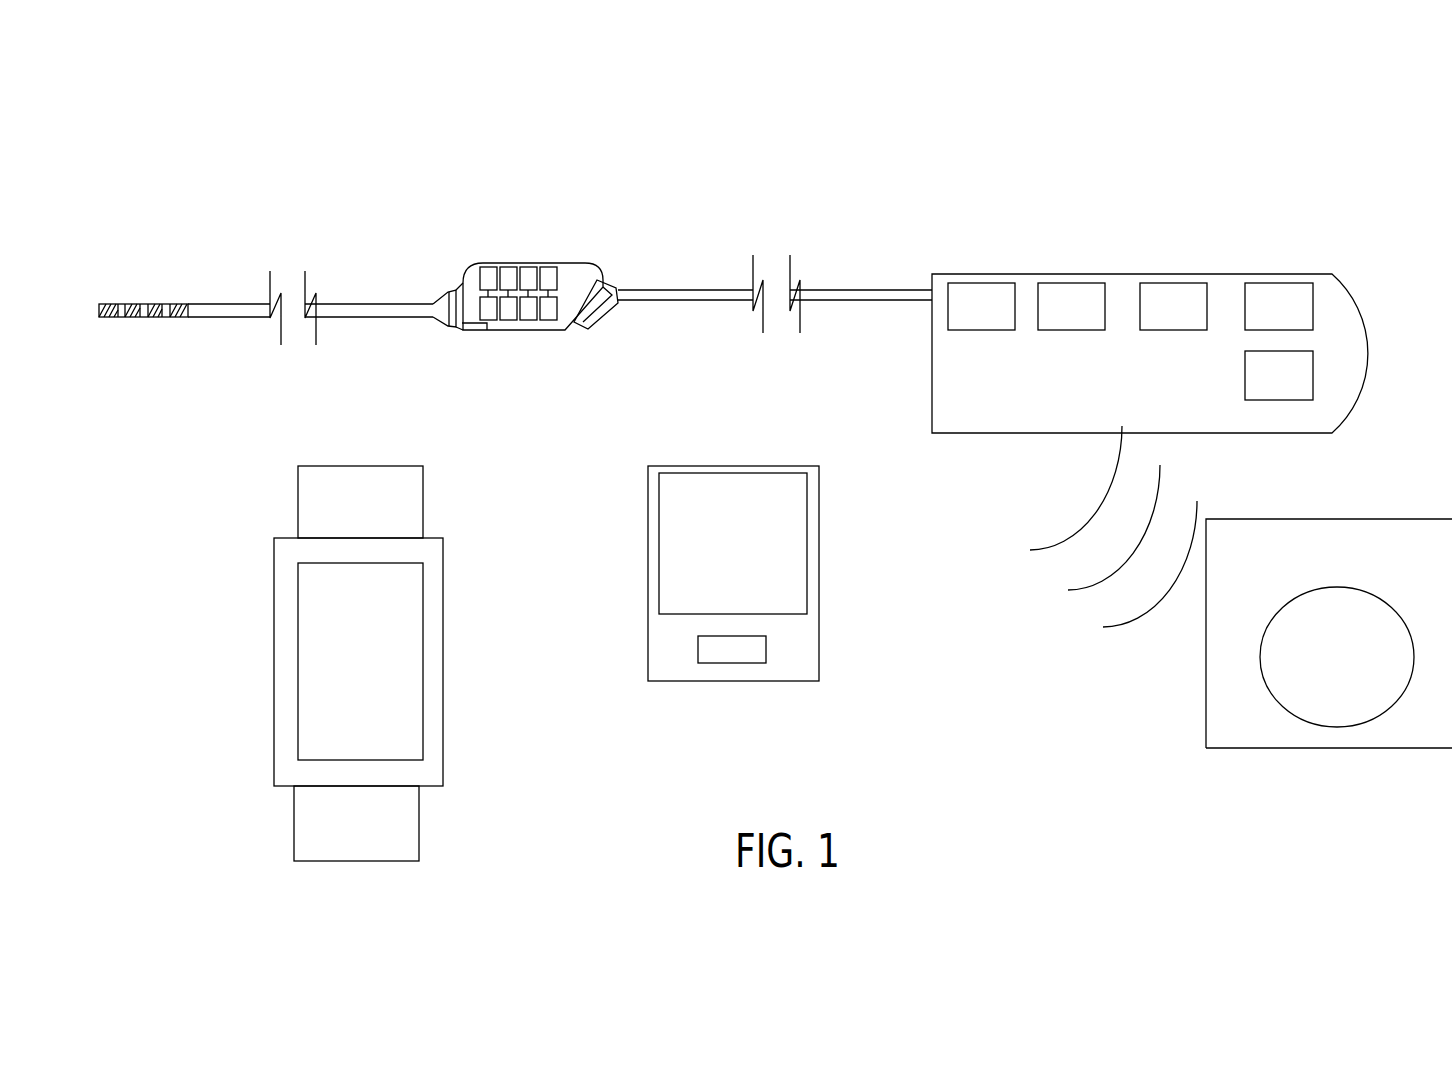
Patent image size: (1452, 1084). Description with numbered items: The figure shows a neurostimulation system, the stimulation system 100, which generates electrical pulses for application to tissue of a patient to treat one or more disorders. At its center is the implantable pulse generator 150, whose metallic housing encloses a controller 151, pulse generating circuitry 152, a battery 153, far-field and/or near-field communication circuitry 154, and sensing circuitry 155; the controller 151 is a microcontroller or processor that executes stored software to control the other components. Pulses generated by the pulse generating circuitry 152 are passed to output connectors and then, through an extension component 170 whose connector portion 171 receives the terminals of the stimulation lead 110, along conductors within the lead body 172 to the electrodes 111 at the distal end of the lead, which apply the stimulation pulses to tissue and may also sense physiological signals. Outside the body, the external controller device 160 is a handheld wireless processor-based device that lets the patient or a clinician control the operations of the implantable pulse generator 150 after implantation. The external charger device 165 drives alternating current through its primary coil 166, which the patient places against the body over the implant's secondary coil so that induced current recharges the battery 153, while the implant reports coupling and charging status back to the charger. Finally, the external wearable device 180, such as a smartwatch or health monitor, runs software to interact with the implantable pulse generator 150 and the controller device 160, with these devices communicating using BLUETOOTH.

The stimulation system 100 is at (1226, 220).
The stimulation lead 110 is at (225, 313).
The electrodes 111 is at (153, 317).
The implantable pulse generator 150 is at (1150, 393).
The controller 151 is at (996, 321).
The pulse generating circuitry 152 is at (1086, 321).
The battery 153 is at (1188, 321).
The communication circuitry 154 is at (1294, 321).
The sensing circuitry 155 is at (1294, 390).
The external controller device 160 is at (648, 545).
The external charger device 165 is at (1292, 633).
The primary coil 166 is at (1352, 669).
The extension component 170 is at (614, 278).
The connector portion 171 is at (528, 263).
The lead body 172 is at (681, 302).
The external wearable device 180 is at (274, 628).